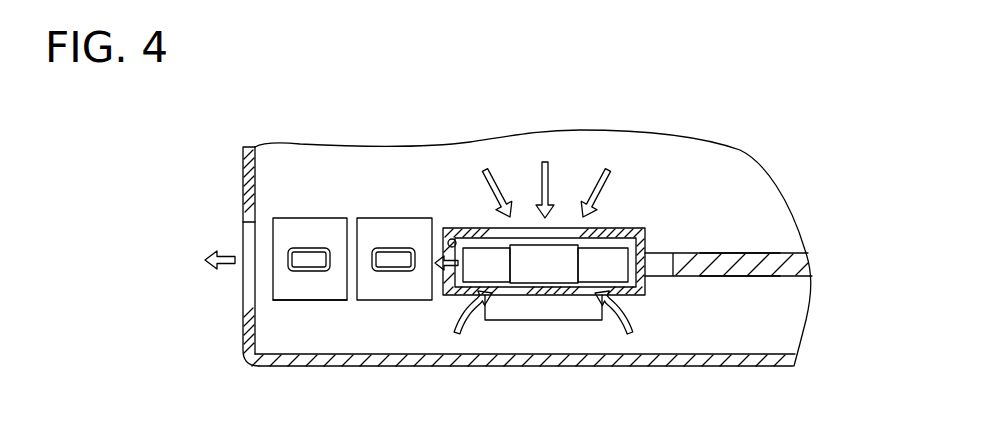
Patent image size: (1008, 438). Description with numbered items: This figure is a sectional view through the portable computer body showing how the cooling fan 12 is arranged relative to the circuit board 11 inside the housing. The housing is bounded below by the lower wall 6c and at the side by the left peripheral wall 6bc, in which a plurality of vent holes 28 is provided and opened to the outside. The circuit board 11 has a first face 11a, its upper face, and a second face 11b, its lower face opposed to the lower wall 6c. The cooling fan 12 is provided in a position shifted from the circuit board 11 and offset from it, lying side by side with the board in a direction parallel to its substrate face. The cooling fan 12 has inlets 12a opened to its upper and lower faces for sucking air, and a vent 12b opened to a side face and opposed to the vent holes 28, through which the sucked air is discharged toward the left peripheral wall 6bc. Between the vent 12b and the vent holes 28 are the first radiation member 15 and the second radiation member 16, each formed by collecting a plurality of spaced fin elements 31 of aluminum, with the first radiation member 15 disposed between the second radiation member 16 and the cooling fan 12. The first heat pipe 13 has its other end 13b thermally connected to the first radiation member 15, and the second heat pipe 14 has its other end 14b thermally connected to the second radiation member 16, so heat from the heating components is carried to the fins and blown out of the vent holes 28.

The left peripheral wall 6bc is at (243, 180).
The vent hole 28 is at (243, 222).
The lower wall 6c is at (537, 366).
The second radiation member 16 is at (337, 221).
The second heat pipe 14 is at (305, 245).
The other end of the second heat pipe 14b is at (305, 272).
The fin element 31 is at (337, 290).
The first radiation member 15 is at (419, 221).
The first heat pipe 13 is at (393, 245).
The other end of the first heat pipe 13b is at (393, 272).
The cooling fan 12 is at (646, 227).
The inlet 12a is at (582, 229).
The vent 12b is at (452, 239).
The circuit board 11 is at (792, 251).
The first face 11a is at (737, 253).
The second face 11b is at (737, 277).